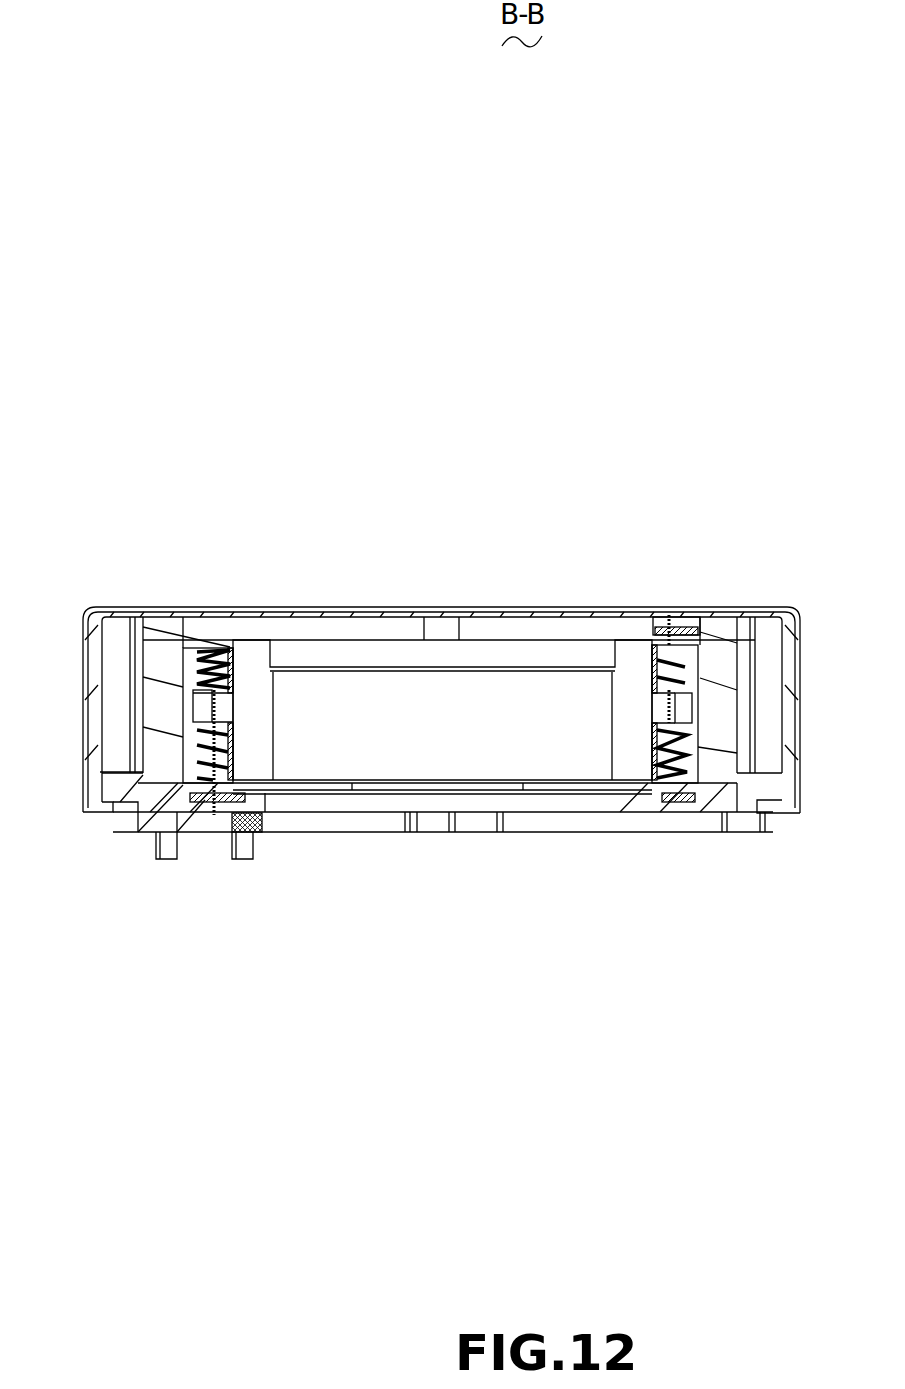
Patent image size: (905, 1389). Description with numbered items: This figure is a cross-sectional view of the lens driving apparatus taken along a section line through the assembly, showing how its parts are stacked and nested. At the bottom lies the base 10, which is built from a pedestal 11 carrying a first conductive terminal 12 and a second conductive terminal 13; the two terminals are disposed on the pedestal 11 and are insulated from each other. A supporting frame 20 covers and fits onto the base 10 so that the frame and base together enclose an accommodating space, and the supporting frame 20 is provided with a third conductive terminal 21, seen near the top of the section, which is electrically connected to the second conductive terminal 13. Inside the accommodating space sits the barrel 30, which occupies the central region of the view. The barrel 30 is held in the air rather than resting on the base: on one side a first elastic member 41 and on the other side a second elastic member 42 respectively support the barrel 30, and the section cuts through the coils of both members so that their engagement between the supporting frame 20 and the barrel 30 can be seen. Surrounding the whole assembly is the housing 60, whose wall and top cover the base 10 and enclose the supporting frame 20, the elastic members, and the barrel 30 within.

The base 10 is at (436, 865).
The pedestal 11 is at (157, 793).
The first conductive terminal 12 is at (227, 802).
The second conductive terminal 13 is at (255, 860).
The supporting frame 20 is at (157, 698).
The third conductive terminal 21 is at (700, 632).
The barrel 30 is at (252, 662).
The first elastic member 41 is at (685, 665).
The second elastic member 42 is at (198, 763).
The housing 60 is at (98, 628).